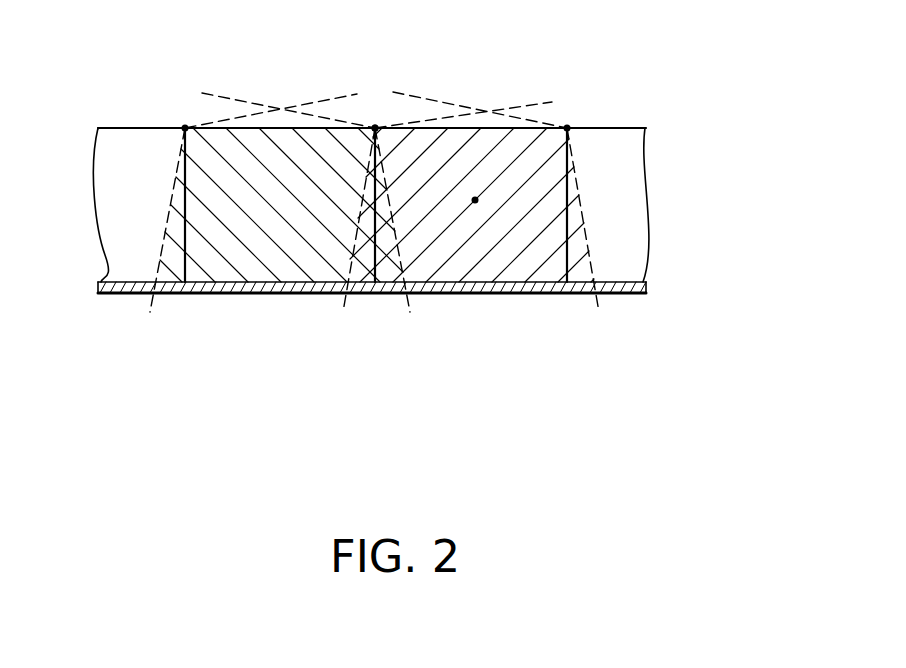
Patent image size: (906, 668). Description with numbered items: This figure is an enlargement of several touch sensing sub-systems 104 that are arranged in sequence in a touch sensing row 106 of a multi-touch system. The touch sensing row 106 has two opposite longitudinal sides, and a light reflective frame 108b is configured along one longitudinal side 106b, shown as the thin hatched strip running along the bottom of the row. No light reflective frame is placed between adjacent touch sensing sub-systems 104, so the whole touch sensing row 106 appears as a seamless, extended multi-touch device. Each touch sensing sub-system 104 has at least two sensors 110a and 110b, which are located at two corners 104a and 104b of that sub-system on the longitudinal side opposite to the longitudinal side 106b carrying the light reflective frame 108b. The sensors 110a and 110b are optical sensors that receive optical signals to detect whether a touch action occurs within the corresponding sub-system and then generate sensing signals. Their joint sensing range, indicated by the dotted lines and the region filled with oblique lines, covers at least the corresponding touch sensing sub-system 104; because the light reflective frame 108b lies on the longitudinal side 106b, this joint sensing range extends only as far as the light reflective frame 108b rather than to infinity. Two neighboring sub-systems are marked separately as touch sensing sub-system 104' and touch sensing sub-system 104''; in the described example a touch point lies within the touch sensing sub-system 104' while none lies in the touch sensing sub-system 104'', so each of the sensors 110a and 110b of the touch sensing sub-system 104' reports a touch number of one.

The touch sensing sub-system 104 is at (376, 273).
The corner 104a is at (553, 141).
The corner 104b is at (377, 133).
The touch sensing sub-system 104' is at (280, 291).
The touch sensing sub-system 104'' is at (471, 291).
The touch sensing row 106 is at (745, 128).
The longitudinal side 106b is at (537, 302).
The light reflective frame 108b is at (260, 294).
The sensor 110a is at (375, 127).
The sensor 110b is at (185, 127).